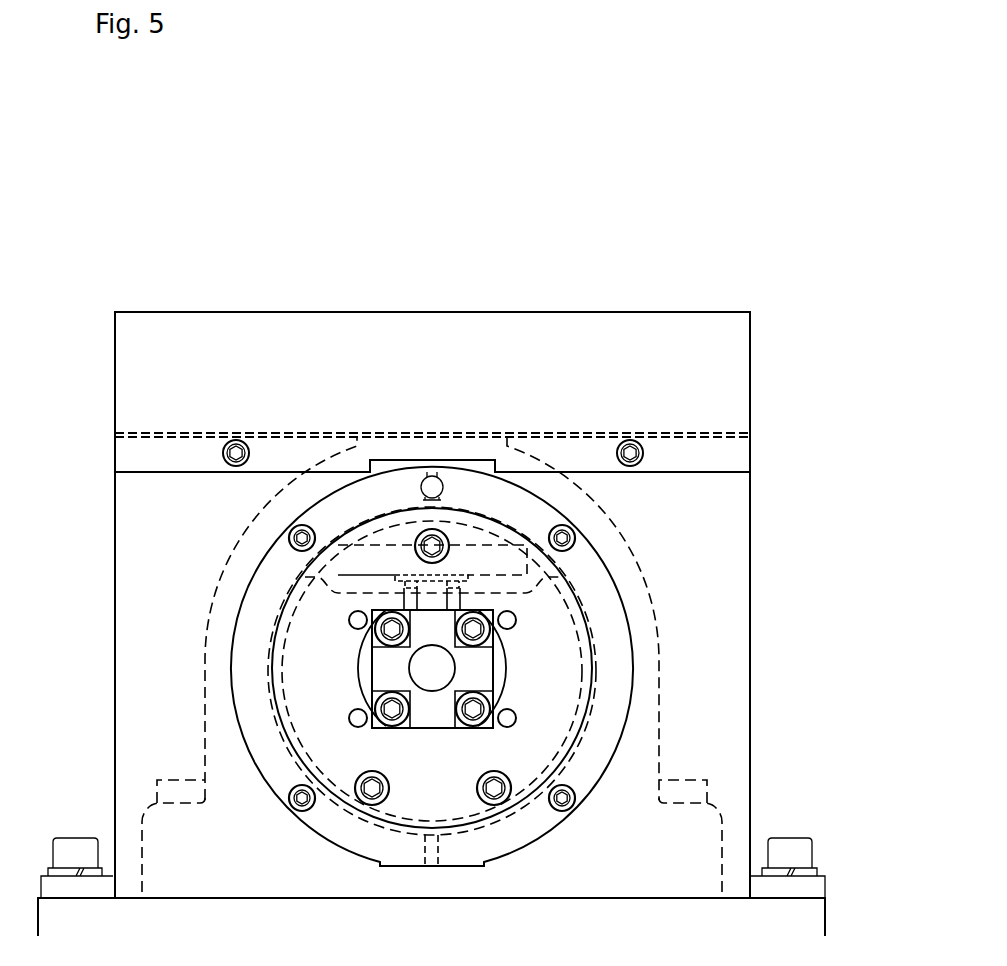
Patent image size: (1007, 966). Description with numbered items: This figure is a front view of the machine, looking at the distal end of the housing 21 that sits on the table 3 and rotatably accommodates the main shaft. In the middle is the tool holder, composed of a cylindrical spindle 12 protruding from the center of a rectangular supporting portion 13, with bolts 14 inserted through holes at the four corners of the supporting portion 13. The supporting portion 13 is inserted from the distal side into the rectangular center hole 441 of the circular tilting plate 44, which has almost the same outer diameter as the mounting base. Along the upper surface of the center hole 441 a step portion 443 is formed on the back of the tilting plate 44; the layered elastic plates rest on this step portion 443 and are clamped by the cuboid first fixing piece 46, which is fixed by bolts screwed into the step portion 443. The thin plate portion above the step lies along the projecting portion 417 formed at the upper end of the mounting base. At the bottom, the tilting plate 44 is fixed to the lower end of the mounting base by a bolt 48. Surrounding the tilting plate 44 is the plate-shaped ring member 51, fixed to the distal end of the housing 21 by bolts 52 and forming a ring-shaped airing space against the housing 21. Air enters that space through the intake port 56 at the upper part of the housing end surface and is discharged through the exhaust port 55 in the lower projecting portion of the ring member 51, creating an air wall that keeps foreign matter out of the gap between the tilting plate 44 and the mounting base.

The table 3 is at (798, 925).
The spindle 12 is at (430, 663).
The supporting portion 13 is at (480, 670).
The bolts 14 is at (350, 712).
The housing 21 is at (727, 622).
The tilting plate 44 is at (563, 622).
The first fixing piece 46 is at (472, 582).
The bolt 48 is at (375, 797).
The ring member 51 is at (493, 848).
The bolts 52 is at (305, 808).
The exhaust port 55 is at (437, 853).
The intake port 56 is at (432, 476).
The projecting portion 417 is at (363, 520).
The center hole 441 is at (385, 705).
The step portion 443 is at (363, 590).